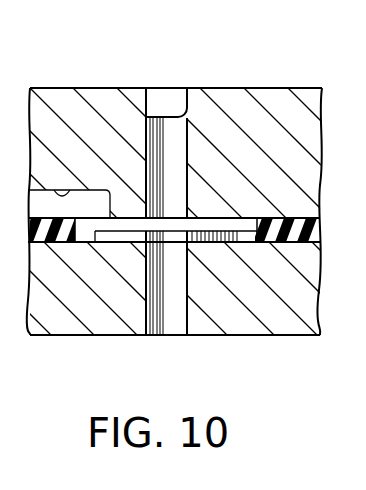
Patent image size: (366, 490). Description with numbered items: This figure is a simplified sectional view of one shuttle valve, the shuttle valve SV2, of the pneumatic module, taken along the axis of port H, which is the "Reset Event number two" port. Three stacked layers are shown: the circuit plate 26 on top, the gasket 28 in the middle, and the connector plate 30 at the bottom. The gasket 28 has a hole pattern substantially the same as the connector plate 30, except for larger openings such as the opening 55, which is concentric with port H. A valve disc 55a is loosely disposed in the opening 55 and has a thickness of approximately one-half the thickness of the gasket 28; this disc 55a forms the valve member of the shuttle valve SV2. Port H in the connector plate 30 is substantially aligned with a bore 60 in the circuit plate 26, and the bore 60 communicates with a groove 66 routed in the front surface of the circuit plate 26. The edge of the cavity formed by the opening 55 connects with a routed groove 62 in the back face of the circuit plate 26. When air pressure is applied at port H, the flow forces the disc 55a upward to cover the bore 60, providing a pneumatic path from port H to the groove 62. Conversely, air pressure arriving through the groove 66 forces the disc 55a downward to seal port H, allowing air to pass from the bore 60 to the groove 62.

The circuit plate 26 is at (292, 145).
The gasket 28 is at (293, 234).
The connector plate 30 is at (288, 318).
The opening 55 is at (257, 219).
The valve disc 55a is at (206, 232).
The bore 60 is at (154, 142).
The routed groove 62 is at (68, 192).
The groove 66 is at (173, 118).
The port H is at (172, 336).
The shuttle valve SV2 is at (208, 336).